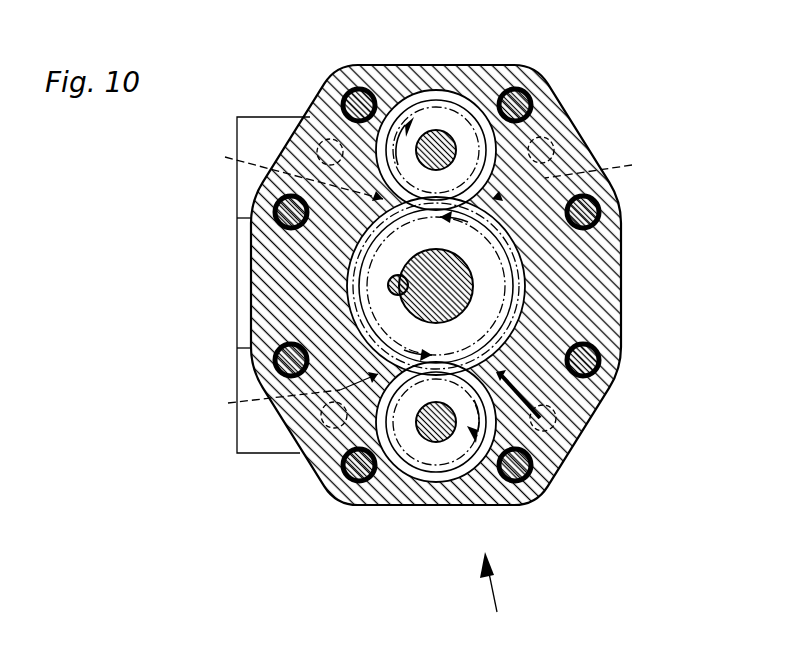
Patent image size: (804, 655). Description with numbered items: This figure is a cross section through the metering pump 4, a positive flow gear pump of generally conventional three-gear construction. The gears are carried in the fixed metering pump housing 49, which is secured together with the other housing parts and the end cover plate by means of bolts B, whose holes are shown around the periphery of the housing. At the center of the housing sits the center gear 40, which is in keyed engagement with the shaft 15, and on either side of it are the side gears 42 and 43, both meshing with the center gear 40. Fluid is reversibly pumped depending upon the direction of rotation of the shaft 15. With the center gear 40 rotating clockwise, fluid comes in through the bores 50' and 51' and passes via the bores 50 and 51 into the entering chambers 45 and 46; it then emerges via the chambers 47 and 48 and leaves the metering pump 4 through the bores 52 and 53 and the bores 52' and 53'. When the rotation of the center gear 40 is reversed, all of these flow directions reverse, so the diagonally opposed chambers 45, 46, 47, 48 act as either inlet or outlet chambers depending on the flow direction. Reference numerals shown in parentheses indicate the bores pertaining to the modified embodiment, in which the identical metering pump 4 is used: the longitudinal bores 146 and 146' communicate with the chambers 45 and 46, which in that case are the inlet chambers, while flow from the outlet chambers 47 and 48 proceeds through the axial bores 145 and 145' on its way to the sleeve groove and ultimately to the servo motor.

The metering pump 4 is at (494, 598).
The shaft 15 is at (405, 292).
The center gear 40 is at (500, 273).
The side gear 42 is at (425, 470).
The side gear 43 is at (432, 90).
The entering chamber 45 is at (348, 436).
The entering chamber 46 is at (520, 92).
The outlet chamber 47 is at (337, 90).
The outlet chamber 48 is at (540, 474).
The metering pump housing 49 is at (587, 328).
The bore 50 is at (286, 394).
The bore 50' is at (269, 483).
The bore 51 is at (578, 177).
The bore 51' is at (566, 104).
The bore 52 is at (289, 173).
The bore 52' is at (289, 93).
The bore 53 is at (600, 416).
The bore 53' is at (576, 467).
The axial bore 145 is at (240, 237).
The axial bore 145' is at (626, 485).
The longitudinal bore 146 is at (243, 483).
The longitudinal bore 146' is at (607, 92).
The bolts B is at (592, 212).